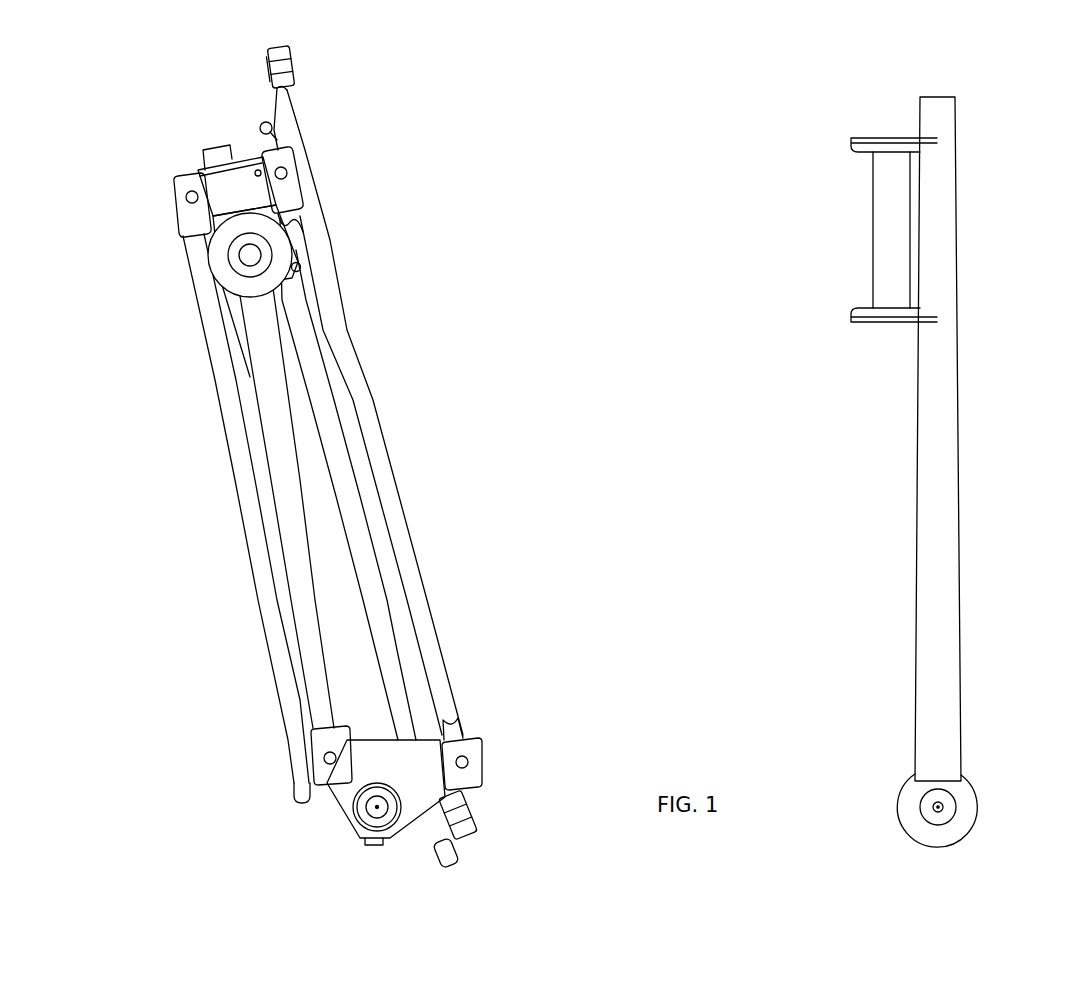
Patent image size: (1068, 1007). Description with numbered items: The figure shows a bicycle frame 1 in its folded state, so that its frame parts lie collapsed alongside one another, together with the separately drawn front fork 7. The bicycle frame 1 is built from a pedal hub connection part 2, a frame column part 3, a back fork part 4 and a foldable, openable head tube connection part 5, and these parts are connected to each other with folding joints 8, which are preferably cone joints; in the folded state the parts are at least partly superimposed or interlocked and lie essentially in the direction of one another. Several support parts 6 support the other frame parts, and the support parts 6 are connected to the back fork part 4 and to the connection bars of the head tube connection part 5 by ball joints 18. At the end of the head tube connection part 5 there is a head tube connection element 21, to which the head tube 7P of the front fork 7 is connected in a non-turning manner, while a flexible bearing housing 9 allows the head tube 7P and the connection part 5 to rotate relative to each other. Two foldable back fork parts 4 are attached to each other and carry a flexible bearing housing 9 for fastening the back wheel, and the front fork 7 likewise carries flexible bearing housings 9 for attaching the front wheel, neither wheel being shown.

The bicycle frame 1 is at (535, 414).
The pedal hub connection part 2 is at (395, 755).
The frame column part 3 is at (362, 587).
The back fork part 4 is at (280, 455).
The head tube connection part 5 is at (347, 335).
The support part 6 is at (270, 612).
The front fork 7 is at (946, 228).
The head tube 7P is at (892, 227).
The folding joint 8 is at (192, 197).
The flexible bearing housing 9 is at (225, 262).
The ball joint 18 is at (261, 123).
The head tube connection element 21 is at (293, 64).